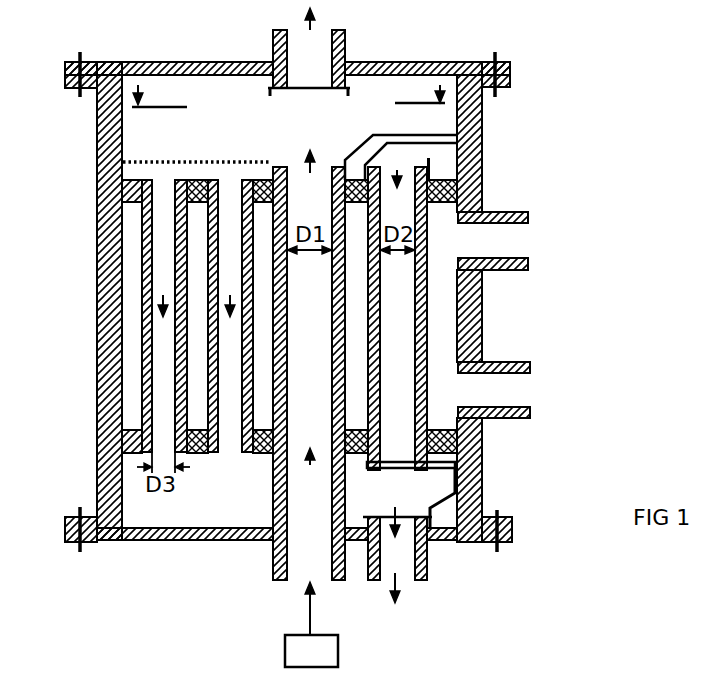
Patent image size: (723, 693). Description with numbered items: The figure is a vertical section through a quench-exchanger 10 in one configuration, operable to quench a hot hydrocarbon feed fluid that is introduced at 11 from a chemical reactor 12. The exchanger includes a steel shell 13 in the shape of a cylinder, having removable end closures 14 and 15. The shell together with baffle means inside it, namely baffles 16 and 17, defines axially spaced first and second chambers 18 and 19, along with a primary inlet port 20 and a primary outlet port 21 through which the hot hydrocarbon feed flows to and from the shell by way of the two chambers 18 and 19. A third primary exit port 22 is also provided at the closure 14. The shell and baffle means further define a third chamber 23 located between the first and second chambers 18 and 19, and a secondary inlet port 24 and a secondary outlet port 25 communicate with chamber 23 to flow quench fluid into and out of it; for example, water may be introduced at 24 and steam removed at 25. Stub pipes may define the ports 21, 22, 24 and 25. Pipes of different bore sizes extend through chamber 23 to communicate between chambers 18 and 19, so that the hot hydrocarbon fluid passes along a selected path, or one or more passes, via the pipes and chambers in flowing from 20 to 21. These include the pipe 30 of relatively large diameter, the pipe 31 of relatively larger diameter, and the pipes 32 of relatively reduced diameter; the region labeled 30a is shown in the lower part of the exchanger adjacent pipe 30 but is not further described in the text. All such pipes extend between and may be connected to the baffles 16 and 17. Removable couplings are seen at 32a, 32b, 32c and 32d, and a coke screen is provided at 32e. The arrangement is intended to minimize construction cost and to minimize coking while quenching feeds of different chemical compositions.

The exchanger 10 is at (58, 390).
The hydrocarbon feed fluid introduction 11 is at (282, 602).
The chemical reactor 12 is at (310, 650).
The steel shell 13 is at (97, 235).
The end closure 14 is at (167, 542).
The end closure 15 is at (447, 62).
The baffle 16 is at (132, 442).
The baffle 17 is at (135, 193).
The first chamber 18 is at (210, 509).
The second chamber 19 is at (245, 122).
The primary inlet port 20 is at (303, 563).
The primary outlet port 21 is at (292, 42).
The third primary exit port 22 is at (427, 573).
The third chamber 23 is at (435, 308).
The secondary inlet port 24 is at (530, 390).
The secondary outlet port 25 is at (528, 240).
The pipe 30 is at (310, 287).
The lower passage 30a is at (345, 492).
The pipe 31 is at (400, 336).
The pipes 32 is at (162, 329).
The removable coupling 32a is at (457, 135).
The removable coupling 32b is at (455, 470).
The removable coupling 32c is at (495, 53).
The removable coupling 32d is at (497, 545).
The coke screen 32e is at (182, 162).